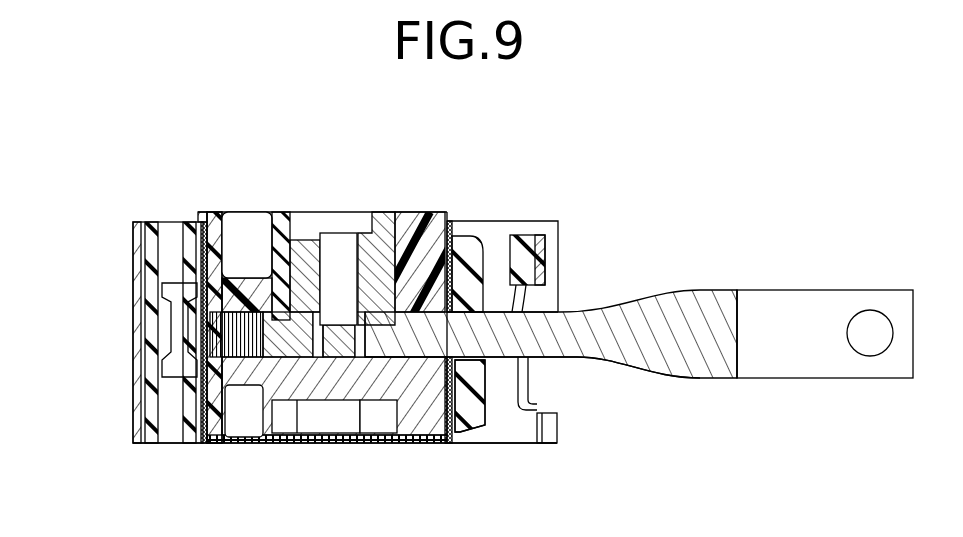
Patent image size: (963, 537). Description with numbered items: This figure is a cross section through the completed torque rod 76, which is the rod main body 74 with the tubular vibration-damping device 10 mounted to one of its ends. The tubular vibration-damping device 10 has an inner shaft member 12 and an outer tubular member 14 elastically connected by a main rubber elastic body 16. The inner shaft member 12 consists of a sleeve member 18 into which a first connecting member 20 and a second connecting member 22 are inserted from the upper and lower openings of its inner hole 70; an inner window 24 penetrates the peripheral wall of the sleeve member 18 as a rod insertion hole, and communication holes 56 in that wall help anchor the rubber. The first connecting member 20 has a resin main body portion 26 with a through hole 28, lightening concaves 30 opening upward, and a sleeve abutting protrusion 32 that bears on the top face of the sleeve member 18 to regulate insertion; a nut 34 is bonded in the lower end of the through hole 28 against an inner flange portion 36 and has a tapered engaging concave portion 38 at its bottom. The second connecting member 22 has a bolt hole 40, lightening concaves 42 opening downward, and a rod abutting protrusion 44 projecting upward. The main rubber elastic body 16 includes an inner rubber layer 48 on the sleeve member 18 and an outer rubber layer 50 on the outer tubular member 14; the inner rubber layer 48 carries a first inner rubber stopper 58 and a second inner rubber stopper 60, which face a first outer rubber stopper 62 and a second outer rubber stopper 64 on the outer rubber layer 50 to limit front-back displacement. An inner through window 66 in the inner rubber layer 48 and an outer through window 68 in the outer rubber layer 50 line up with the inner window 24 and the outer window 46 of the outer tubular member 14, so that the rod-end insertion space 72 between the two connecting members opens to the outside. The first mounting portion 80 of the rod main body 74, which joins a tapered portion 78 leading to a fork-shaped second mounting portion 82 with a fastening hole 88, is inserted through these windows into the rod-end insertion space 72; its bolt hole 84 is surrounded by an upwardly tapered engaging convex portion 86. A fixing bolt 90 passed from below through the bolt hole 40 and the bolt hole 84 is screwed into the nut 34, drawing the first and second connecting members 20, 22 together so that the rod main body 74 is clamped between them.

The tubular vibration-damping device 10 is at (545, 198).
The inner shaft member 12 is at (232, 207).
The outer tubular member 14 is at (122, 253).
The main rubber elastic body 16 is at (483, 428).
The sleeve member 18 is at (207, 417).
The first connecting member 20 is at (398, 206).
The second connecting member 22 is at (420, 444).
The inner window 24 is at (456, 360).
The main body portion 26 is at (428, 233).
The through hole 28 is at (280, 268).
The lightening concaves 30 is at (258, 233).
The sleeve abutting protrusion 32 is at (205, 218).
The nut 34 is at (305, 270).
The inner flange portion 36 is at (377, 242).
The engaging concave portion 38 is at (322, 352).
The bolt hole 40 is at (370, 412).
The lightening concaves 42 is at (268, 403).
The rod abutting protrusion 44 is at (258, 335).
The outer window 46 is at (558, 401).
The inner rubber layer 48 is at (453, 430).
The outer rubber layer 50 is at (541, 433).
The communication holes 56 is at (203, 277).
The first inner rubber stopper 58 is at (190, 345).
The second inner rubber stopper 60 is at (467, 402).
The first outer rubber stopper 62 is at (150, 313).
The second outer rubber stopper 64 is at (528, 240).
The inner through window 66 is at (480, 321).
The outer through window 68 is at (530, 293).
The inner hole 70 is at (455, 410).
The rod-end insertion space 72 is at (233, 323).
The rod main body 74 is at (679, 394).
The torque rod 76 is at (728, 205).
The tapered portion 78 is at (649, 293).
The first mounting portion 80 is at (296, 370).
The second mounting portion 82 is at (830, 285).
The bolt hole 84 is at (355, 340).
The engaging convex portion 86 is at (389, 280).
The fastening hole 88 is at (870, 349).
The fixing bolt 90 is at (385, 417).